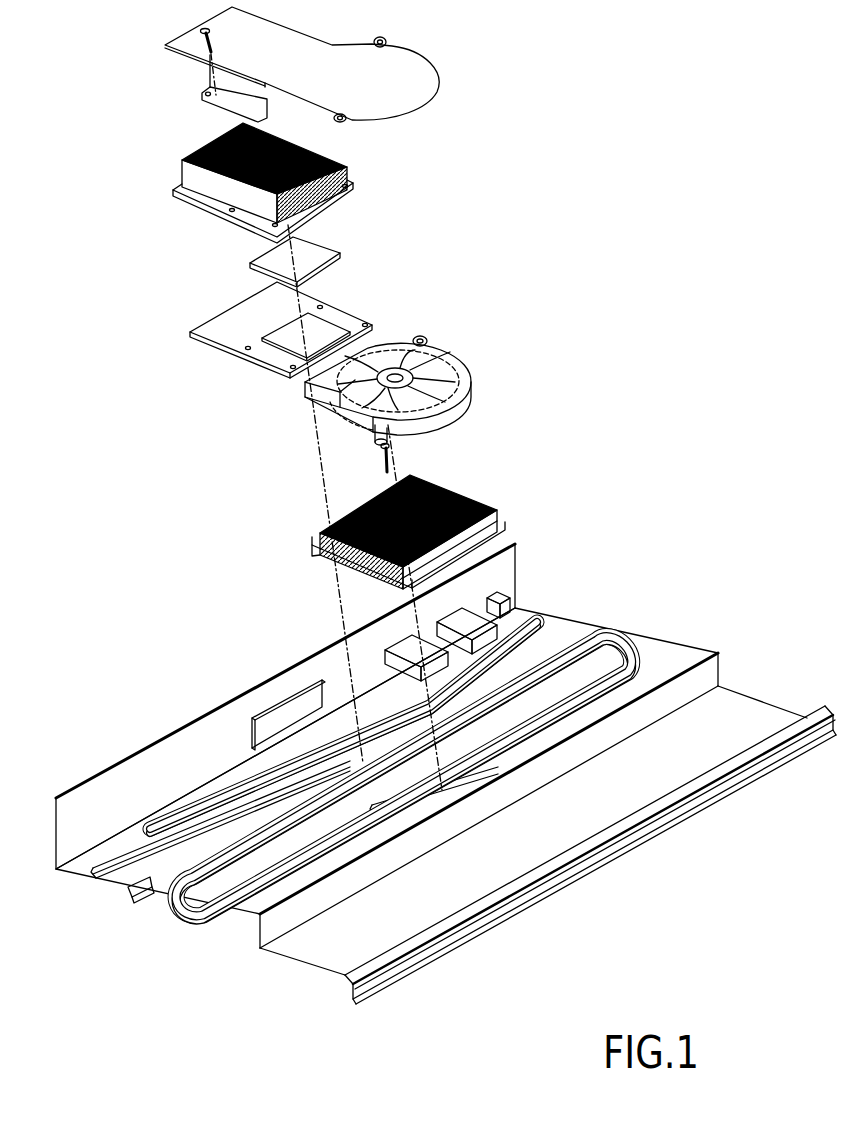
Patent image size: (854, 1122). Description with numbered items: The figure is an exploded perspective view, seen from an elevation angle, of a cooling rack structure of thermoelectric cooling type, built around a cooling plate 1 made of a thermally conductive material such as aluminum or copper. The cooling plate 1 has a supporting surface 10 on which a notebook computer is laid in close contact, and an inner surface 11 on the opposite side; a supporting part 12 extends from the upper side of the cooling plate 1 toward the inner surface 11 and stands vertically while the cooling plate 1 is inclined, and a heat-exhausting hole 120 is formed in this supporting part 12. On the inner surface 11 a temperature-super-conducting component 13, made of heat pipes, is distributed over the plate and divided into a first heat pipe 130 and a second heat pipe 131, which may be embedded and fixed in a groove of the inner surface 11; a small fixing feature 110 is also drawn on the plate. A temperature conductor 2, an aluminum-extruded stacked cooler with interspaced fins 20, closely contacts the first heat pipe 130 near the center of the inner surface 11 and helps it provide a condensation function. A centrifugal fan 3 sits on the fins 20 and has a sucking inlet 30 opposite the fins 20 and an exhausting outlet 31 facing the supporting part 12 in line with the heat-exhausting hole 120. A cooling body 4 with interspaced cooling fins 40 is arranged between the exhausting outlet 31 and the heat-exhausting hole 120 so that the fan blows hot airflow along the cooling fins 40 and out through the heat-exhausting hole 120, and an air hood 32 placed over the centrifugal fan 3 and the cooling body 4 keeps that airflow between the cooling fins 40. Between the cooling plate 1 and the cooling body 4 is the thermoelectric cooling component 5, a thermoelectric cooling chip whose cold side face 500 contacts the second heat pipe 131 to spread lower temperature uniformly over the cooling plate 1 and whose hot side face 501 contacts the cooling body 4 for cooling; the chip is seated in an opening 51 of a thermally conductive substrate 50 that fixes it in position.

The cooling plate 1 is at (446, 762).
The supporting surface 10 is at (230, 937).
The inner surface 11 is at (655, 665).
The positioning clip 110 is at (130, 895).
The supporting part 12 is at (285, 706).
The heat-exhausting hole 120 is at (288, 700).
The temperature-super-conducting component 13 is at (402, 720).
The first heat pipe 130 is at (603, 650).
The second heat pipe 131 is at (530, 618).
The temperature conductor 2 is at (415, 532).
The fins 20 is at (320, 532).
The centrifugal fan 3 is at (379, 395).
The sucking inlet 30 is at (418, 442).
The exhausting outlet 31 is at (310, 396).
The air hood 32 is at (268, 37).
The cooling body 4 is at (275, 183).
The cooling fins 40 is at (193, 166).
The thermoelectric cooling component 5 is at (279, 301).
The substrate 50 is at (279, 330).
The opening 51 is at (325, 333).
The cold side face 500 is at (268, 278).
The hot side face 501 is at (262, 255).